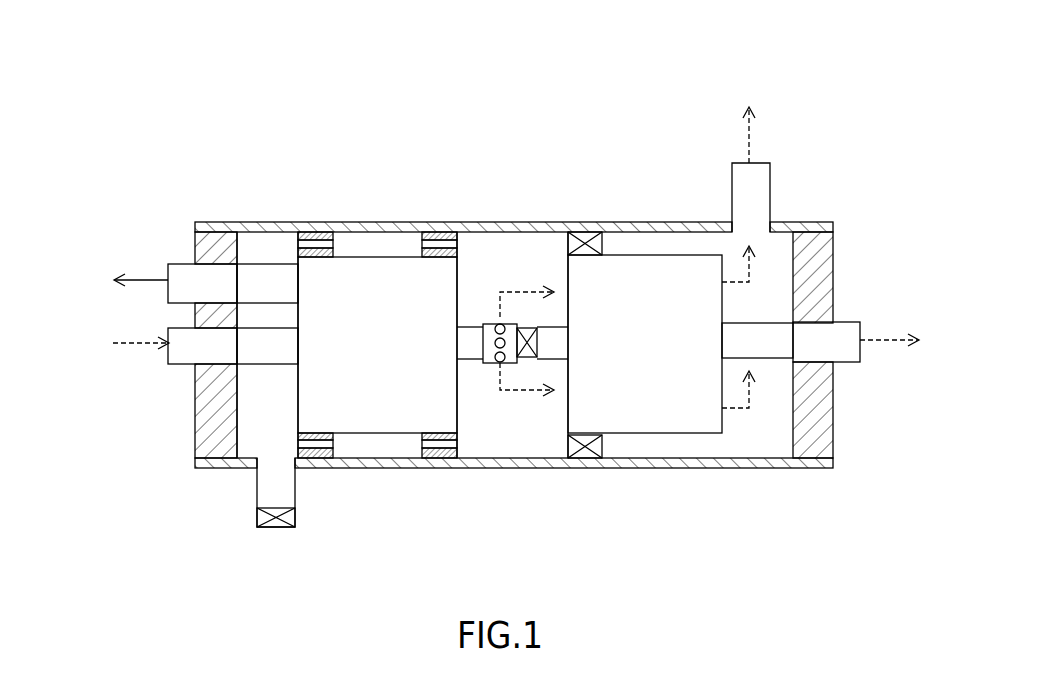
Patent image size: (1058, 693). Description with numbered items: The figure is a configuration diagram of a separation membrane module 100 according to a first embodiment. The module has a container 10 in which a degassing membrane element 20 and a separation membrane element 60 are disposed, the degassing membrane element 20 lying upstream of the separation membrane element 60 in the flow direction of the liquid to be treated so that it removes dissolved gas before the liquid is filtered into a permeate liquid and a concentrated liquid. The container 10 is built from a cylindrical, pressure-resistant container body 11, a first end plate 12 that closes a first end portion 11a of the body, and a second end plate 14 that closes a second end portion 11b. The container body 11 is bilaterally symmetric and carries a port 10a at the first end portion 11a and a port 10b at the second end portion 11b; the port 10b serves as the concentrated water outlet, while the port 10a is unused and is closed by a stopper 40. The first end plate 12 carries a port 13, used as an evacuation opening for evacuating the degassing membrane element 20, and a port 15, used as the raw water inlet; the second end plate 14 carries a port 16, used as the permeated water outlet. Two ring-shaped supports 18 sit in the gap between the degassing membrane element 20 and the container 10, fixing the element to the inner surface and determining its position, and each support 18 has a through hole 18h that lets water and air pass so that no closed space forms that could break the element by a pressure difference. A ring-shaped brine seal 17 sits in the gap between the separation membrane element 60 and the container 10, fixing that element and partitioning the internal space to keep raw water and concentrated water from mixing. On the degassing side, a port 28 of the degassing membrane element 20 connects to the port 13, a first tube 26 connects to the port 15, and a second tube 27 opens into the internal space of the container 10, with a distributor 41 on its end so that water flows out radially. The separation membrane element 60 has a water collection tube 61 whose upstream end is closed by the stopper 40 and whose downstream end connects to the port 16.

The separation membrane module 100 is at (645, 75).
The container 10 is at (663, 220).
The port 10a is at (257, 495).
The port 10b is at (771, 177).
The container body 11 is at (722, 469).
The first end portion 11a is at (213, 230).
The second end portion 11b is at (817, 462).
The first end plate 12 is at (206, 440).
The port 13 is at (183, 264).
The second end plate 14 is at (820, 270).
The port 15 is at (177, 366).
The port 16 is at (848, 364).
The brine seal 17 is at (585, 232).
The support 18 is at (325, 233).
The through hole 18h is at (307, 243).
The degassing membrane element 20 is at (375, 407).
The first tube 26 is at (263, 366).
The second tube 27 is at (470, 364).
The port 28 is at (267, 265).
The stopper 40 is at (527, 357).
The distributor 41 is at (488, 324).
The separation membrane element 60 is at (645, 404).
The water collection tube 61 is at (767, 359).